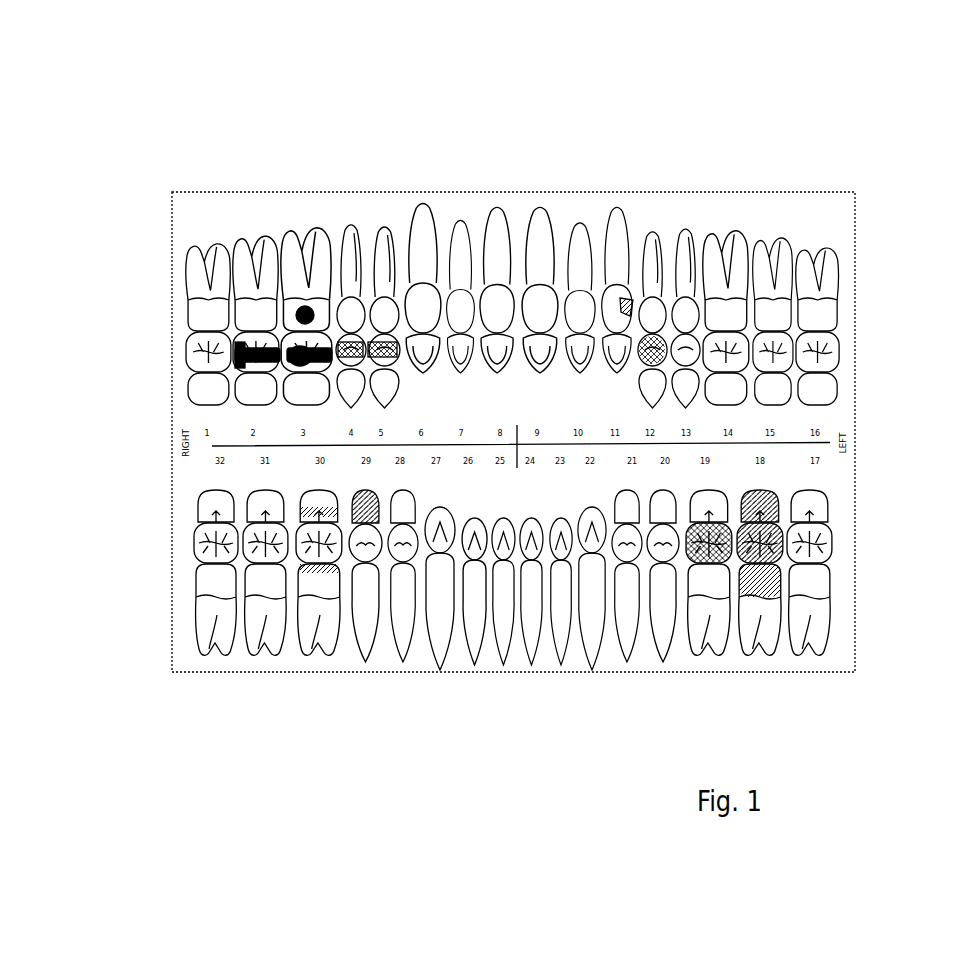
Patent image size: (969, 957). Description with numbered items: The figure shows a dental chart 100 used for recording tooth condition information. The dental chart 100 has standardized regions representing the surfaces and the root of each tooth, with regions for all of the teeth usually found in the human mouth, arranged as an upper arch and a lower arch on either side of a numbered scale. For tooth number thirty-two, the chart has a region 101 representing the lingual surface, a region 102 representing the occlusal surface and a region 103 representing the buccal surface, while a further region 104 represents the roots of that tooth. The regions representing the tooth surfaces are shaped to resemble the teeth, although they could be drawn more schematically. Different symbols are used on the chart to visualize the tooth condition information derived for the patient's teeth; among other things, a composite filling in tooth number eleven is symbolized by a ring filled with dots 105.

The dental chart 100 is at (510, 348).
The lingual surface region 101 is at (191, 506).
The occlusal surface region 102 is at (191, 541).
The buccal surface region 103 is at (191, 578).
The root region 104 is at (191, 606).
The ring filled with dots 105 is at (629, 298).